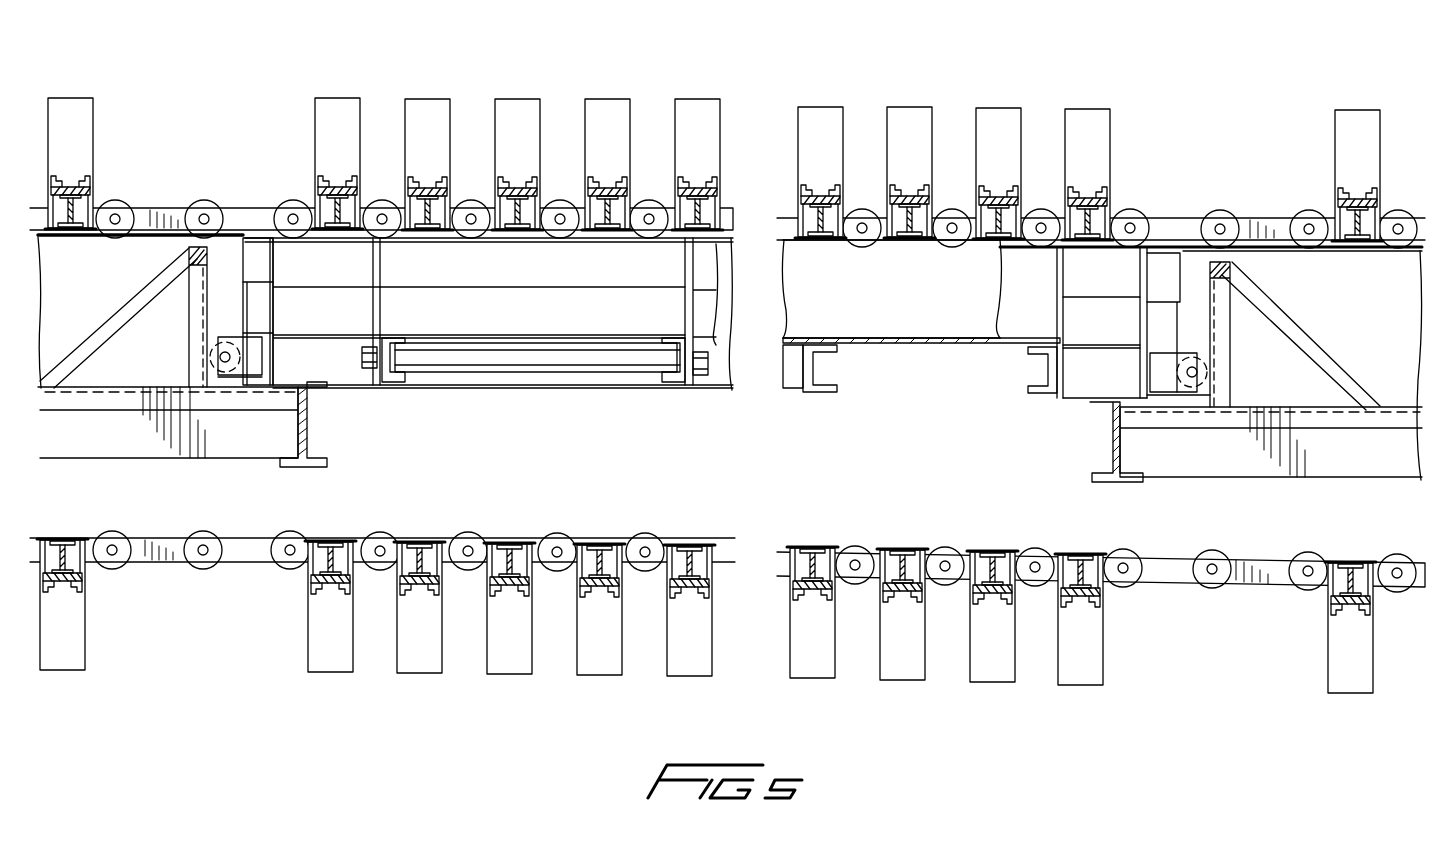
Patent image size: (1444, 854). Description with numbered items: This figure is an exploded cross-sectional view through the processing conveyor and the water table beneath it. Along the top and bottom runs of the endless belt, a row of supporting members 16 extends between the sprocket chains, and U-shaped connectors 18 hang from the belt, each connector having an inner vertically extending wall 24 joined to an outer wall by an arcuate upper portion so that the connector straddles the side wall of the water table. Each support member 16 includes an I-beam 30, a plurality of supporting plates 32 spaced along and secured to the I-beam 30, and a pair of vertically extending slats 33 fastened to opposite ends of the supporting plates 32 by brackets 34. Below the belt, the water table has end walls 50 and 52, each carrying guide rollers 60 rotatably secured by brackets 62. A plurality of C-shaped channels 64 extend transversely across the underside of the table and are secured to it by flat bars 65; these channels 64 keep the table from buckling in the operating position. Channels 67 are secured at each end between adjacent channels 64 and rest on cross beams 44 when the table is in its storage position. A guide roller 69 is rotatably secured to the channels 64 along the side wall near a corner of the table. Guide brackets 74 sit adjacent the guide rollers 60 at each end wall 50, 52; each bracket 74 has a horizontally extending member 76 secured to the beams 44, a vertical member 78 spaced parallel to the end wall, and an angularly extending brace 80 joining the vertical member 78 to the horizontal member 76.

The supporting members 16 is at (710, 376).
The U-shaped connectors 18 is at (343, 90).
The inner wall 24 is at (353, 113).
The I-beam 30 is at (447, 240).
The supporting plates 32 is at (315, 191).
The vertically extending slats 33 is at (318, 172).
The brackets 34 is at (432, 178).
The cross beams 44 is at (308, 440).
The end wall 50 is at (244, 268).
The end wall 52 is at (1185, 285).
The guide rollers 60 is at (218, 363).
The brackets 62 is at (248, 347).
The C-shaped channels 64 is at (268, 342).
The flat bars 65 is at (375, 270).
The channels 67 is at (1097, 368).
The guide rollers 69 is at (575, 348).
The guide brackets 74 is at (143, 287).
The horizontally extending member 76 is at (258, 405).
The vertical member 78 is at (193, 333).
The angularly extending brace 80 is at (108, 320).